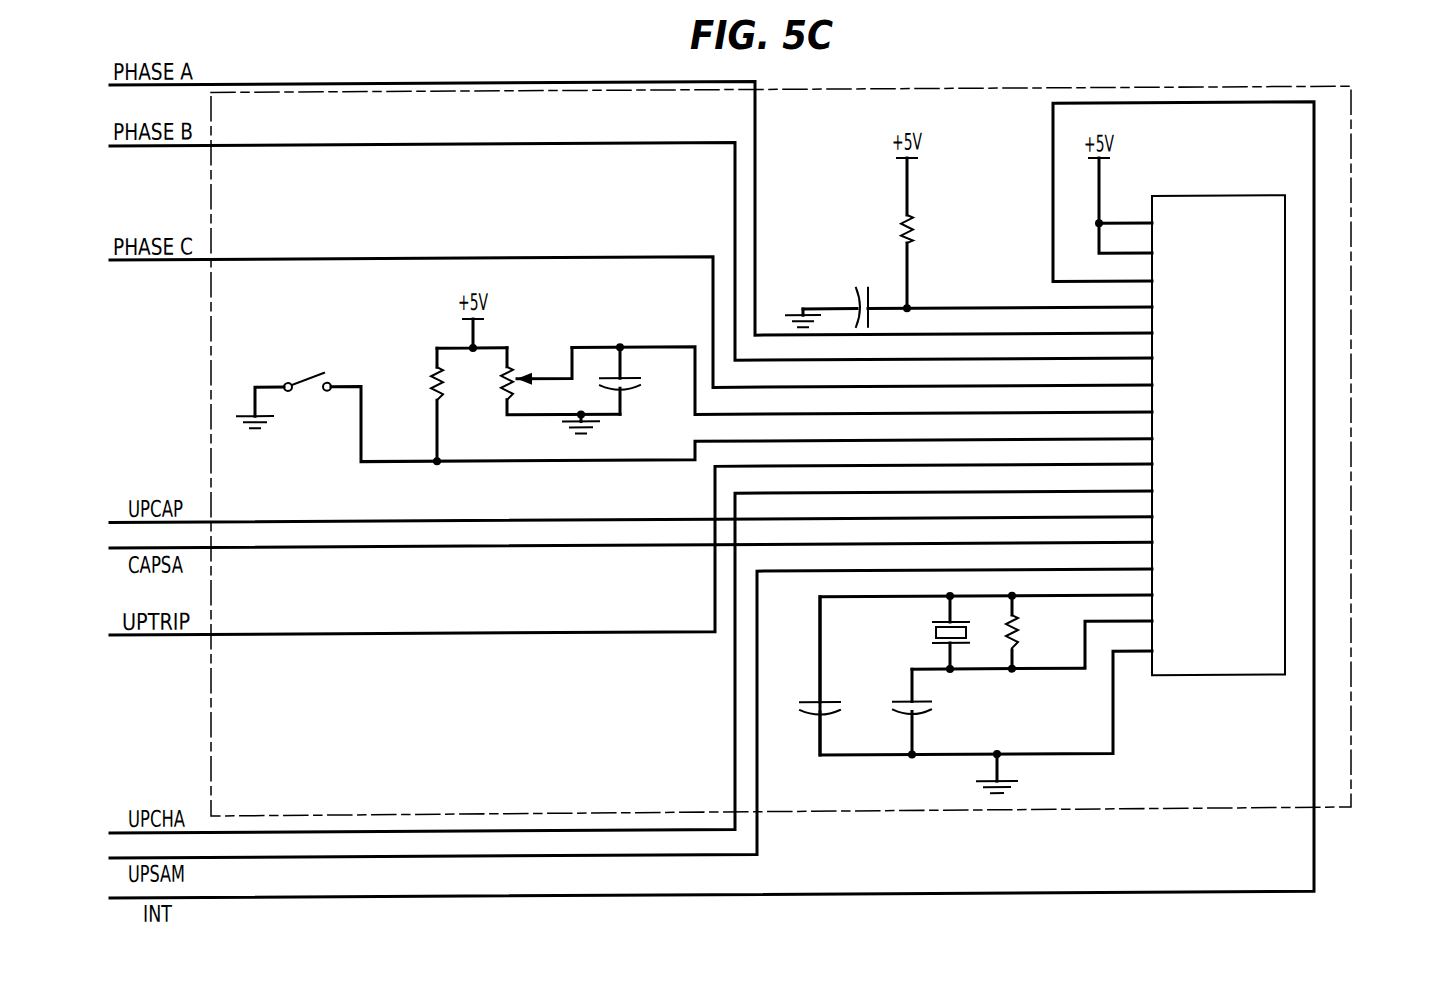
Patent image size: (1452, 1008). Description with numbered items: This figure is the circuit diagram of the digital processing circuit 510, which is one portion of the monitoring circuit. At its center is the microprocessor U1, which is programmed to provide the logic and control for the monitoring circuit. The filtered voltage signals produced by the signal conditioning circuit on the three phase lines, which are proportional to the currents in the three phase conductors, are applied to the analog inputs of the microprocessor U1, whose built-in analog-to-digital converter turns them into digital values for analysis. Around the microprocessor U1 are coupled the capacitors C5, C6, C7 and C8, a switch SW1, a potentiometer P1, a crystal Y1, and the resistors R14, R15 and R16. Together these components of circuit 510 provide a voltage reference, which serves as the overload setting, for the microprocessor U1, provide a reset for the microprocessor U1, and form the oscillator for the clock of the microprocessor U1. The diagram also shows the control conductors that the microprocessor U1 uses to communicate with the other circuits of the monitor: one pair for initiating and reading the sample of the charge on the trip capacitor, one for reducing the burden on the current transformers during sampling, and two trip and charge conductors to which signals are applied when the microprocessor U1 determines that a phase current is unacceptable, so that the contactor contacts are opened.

The digital processing circuit 510 is at (1340, 134).
The microprocessor U1 is at (1257, 459).
The switch SW1 is at (284, 388).
The resistor R14 is at (416, 404).
The potentiometer P1 is at (502, 374).
The capacitor C5 is at (635, 380).
The capacitor C6 is at (863, 294).
The resistor R15 is at (928, 233).
The crystal Y1 is at (938, 632).
The resistor R16 is at (1034, 631).
The capacitor C7 is at (806, 676).
The capacitor C8 is at (898, 712).